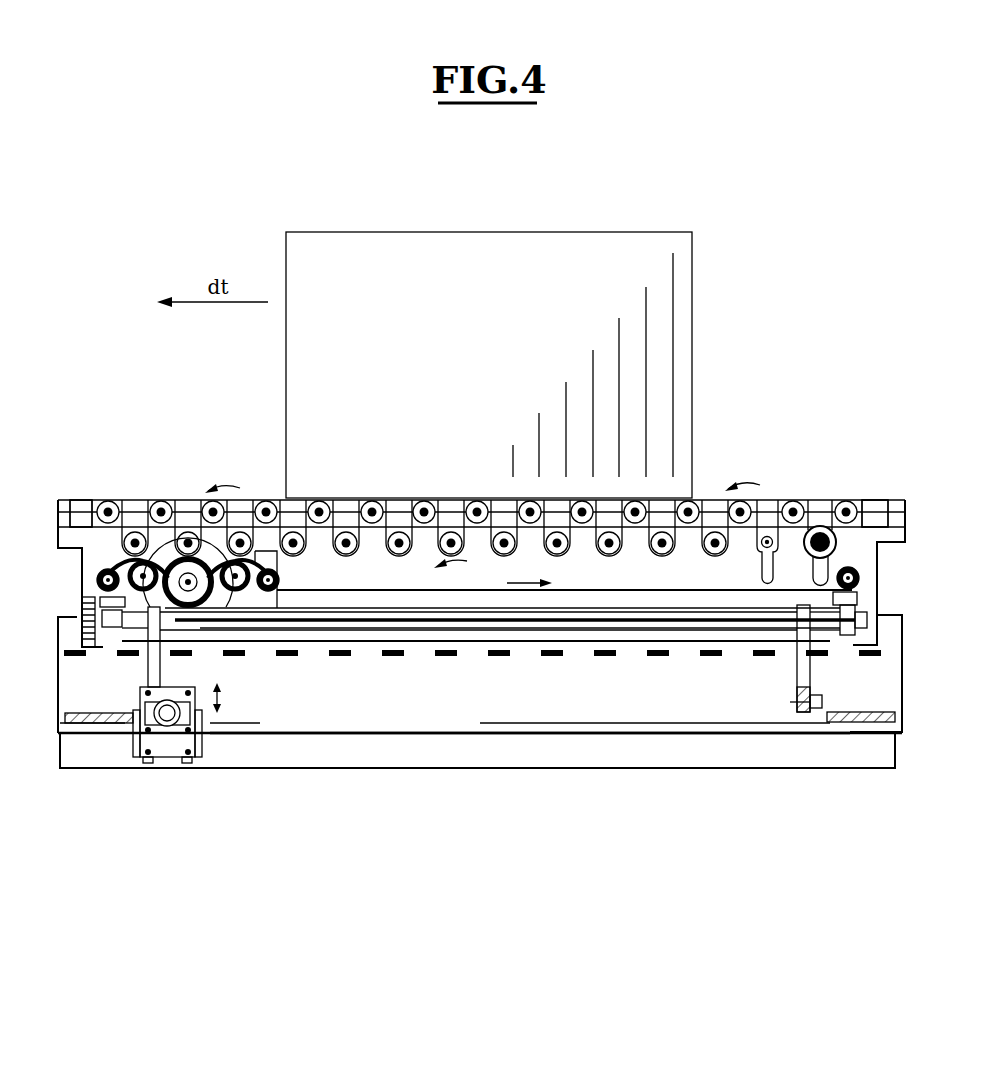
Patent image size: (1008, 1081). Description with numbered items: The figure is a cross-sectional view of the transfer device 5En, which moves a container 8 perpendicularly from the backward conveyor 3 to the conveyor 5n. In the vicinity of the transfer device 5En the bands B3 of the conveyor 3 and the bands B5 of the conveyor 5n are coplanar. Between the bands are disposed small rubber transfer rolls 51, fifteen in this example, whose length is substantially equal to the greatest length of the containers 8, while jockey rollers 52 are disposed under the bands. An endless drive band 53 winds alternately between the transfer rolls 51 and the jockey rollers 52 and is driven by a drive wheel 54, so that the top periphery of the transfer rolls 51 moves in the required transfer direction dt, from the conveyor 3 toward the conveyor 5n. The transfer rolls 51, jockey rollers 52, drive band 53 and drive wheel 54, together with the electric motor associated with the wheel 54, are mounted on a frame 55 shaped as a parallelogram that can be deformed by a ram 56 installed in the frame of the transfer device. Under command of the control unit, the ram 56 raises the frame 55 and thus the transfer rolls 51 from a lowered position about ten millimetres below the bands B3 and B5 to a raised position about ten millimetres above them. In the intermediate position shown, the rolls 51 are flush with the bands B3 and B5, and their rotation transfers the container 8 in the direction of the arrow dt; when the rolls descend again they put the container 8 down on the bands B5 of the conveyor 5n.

The container 8 is at (610, 245).
The conveyor 3 is at (790, 398).
The conveyor 5n is at (130, 436).
The bands B5 is at (75, 498).
The bands B3 is at (878, 498).
The transfer rolls 51 is at (262, 497).
The jockey rollers 52 is at (135, 532).
The endless drive band 53 is at (840, 498).
The drive wheel 54 is at (82, 605).
The frame 55 is at (434, 622).
The ram 56 is at (130, 700).
The transfer device 5En is at (400, 860).